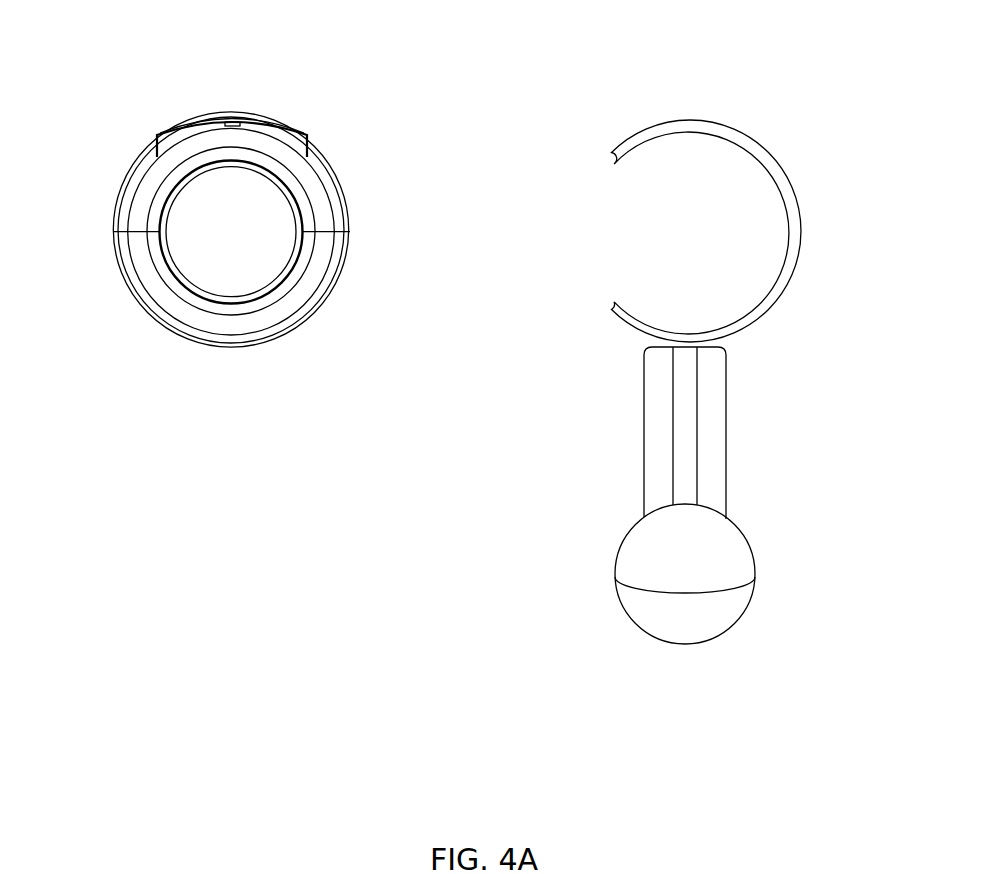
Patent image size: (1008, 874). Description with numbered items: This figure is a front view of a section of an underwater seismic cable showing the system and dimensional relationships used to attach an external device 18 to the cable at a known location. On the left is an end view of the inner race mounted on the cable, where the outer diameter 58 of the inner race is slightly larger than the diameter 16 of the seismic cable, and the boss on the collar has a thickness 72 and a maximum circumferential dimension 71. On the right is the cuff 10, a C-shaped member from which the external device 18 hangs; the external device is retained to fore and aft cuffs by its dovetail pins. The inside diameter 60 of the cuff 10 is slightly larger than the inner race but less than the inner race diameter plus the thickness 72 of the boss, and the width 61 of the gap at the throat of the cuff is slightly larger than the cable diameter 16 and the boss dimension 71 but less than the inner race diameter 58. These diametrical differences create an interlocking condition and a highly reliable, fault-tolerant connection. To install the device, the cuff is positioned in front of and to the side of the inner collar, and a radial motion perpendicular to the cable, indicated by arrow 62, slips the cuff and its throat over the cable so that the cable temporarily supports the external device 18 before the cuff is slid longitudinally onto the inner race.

The cuff 10 is at (665, 120).
The diameter of the seismic cable 16 is at (157, 167).
The external device 18 is at (713, 488).
The outer diameter of the inner race 58 is at (370, 128).
The inside diameter of the cuff 60 is at (737, 335).
The width of the gap at the throat 61 is at (598, 262).
The arrow indicating radial motion 62 is at (610, 307).
The maximum circumferential dimension of the boss 71 is at (157, 135).
The thickness of the boss 72 is at (227, 112).